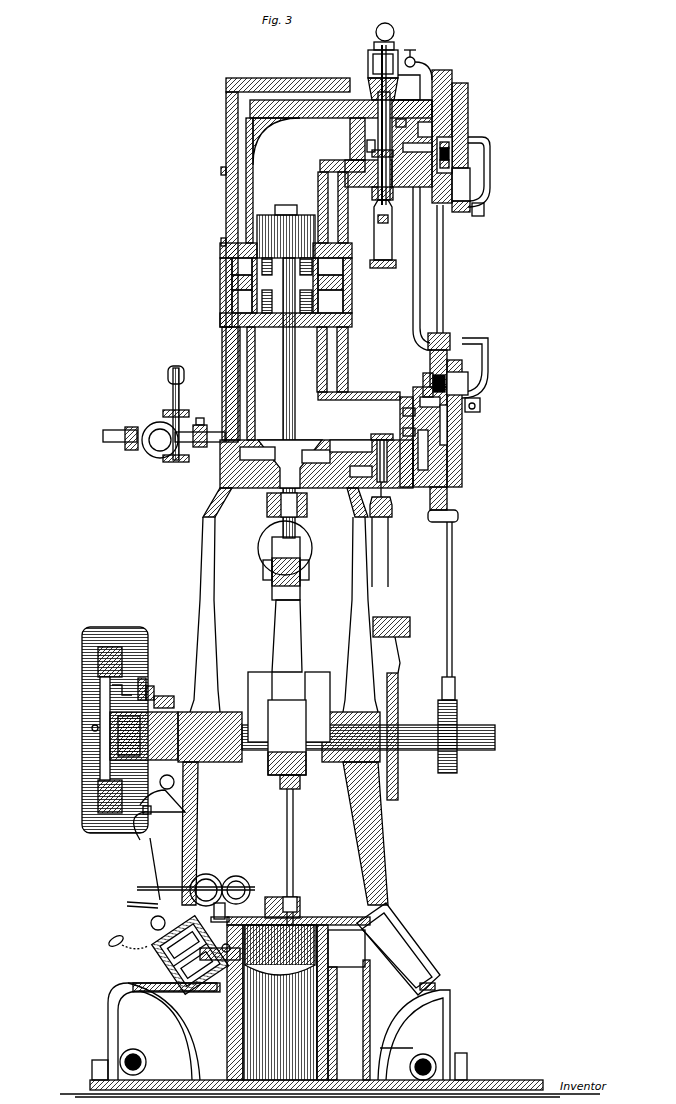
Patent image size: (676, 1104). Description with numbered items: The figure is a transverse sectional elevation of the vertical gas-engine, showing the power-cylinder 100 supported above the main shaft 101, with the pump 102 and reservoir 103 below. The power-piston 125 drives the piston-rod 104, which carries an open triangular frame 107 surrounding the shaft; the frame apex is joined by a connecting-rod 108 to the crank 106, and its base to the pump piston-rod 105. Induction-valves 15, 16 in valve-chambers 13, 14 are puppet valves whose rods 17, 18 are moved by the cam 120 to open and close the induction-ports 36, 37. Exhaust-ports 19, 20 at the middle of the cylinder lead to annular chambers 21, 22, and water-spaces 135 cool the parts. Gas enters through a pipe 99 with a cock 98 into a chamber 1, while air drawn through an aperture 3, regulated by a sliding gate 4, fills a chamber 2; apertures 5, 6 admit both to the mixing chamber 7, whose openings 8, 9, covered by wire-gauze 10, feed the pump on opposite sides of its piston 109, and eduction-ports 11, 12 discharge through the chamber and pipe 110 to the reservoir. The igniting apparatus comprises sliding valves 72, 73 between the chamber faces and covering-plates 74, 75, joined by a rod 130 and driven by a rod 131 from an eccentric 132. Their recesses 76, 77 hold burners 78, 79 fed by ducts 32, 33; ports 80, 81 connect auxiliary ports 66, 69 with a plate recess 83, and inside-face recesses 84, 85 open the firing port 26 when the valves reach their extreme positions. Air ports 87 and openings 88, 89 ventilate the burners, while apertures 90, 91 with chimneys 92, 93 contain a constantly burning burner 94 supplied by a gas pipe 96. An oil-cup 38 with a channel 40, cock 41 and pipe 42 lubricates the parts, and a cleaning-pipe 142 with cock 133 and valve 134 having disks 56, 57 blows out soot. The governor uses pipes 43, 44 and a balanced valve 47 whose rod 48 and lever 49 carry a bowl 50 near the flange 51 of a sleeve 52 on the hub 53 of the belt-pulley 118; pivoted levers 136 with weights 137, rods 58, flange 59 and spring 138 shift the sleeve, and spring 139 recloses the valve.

The gas chamber 1 is at (190, 955).
The air chamber 2 is at (181, 965).
The air aperture 3 is at (156, 960).
The sliding gate 4 is at (143, 950).
The gas chamber aperture 5 is at (188, 935).
The air chamber aperture 6 is at (187, 977).
The mixing chamber 7 is at (185, 947).
The upper mixing chamber opening 8 is at (220, 944).
The lower mixing chamber opening 9 is at (205, 985).
The wire-gauze 10 is at (205, 963).
The upper eduction-port 11 is at (298, 918).
The lower eduction-port 12 is at (349, 1005).
The upper valve-chamber 13 is at (388, 146).
The lower valve-chamber 14 is at (328, 421).
The upper induction-valve 15 is at (366, 147).
The lower induction-valve 16 is at (376, 454).
The upper induction-valve rod 17 is at (391, 234).
The lower induction-valve rod 18 is at (388, 499).
The lower exhaust-port 19 is at (326, 268).
The upper exhaust-port 20 is at (326, 306).
The annular exhaust chamber 21 is at (224, 265).
The annular exhaust chamber 22 is at (350, 302).
The lower firing port 26 is at (405, 418).
The upper valve duct 32 is at (450, 145).
The lower valve duct 33 is at (381, 139).
The upper induction-port 36 is at (405, 152).
The lower induction-port 37 is at (372, 446).
The oil-cup 38 is at (383, 50).
The central channel 40 is at (372, 88).
The cock 41 is at (418, 58).
The oil pipe 42 is at (413, 284).
The pump by-pass pipe 43 is at (227, 940).
The pump by-pass pipe 44 is at (229, 910).
The balanced valve 47 is at (239, 880).
The valve rod 48 is at (163, 886).
The lever 49 is at (152, 855).
The bowl 50 is at (166, 780).
The sleeve flange 51 is at (165, 702).
The screw-threaded sleeve 52 is at (157, 689).
The threaded hub 53 is at (144, 736).
The valve disk 56 is at (170, 412).
The valve disk 57 is at (163, 458).
The rods 58 is at (128, 667).
The sleeve flange 59 is at (142, 681).
The auxiliary port 66 is at (405, 126).
The auxiliary port 69 is at (405, 433).
The upper igniting valve 72 is at (447, 75).
The lower igniting valve 73 is at (448, 500).
The upper covering-plate 74 is at (468, 89).
The lower covering-plate 75 is at (462, 478).
The upper valve recess 76 is at (450, 165).
The lower valve recess 77 is at (447, 379).
The upper ignition-burner 78 is at (450, 154).
The lower ignition-burner 79 is at (444, 360).
The upper valve port 80 is at (452, 130).
The lower valve port 81 is at (462, 420).
The plate recess 83 is at (462, 438).
The inside-face recess 84 is at (409, 87).
The inside-face recess 85 is at (462, 452).
The air ports 87 is at (429, 360).
The air openings 88 is at (394, 193).
The air openings 89 is at (423, 379).
The upper aperture 90 is at (461, 190).
The lower aperture 91 is at (458, 383).
The upper chimney 92 is at (489, 172).
The lower chimney 93 is at (485, 368).
The pilot burner 94 is at (485, 215).
The gas pipe 96 is at (481, 406).
The gas cock 98 is at (133, 899).
The gas pipe 99 is at (150, 923).
The power-cylinder 100 is at (226, 199).
The main shaft 101 is at (496, 737).
The pump 102 is at (277, 1002).
The reservoir 103 is at (279, 1031).
The piston-rod 104 is at (283, 426).
The pump piston-rod 105 is at (298, 850).
The crank 106 is at (312, 681).
The triangular frame 107 is at (287, 737).
The connecting-rod 108 is at (300, 612).
The pump piston 109 is at (280, 950).
The chamber and pipe 110 is at (398, 949).
The belt-pulley 118 is at (92, 826).
The cam 120 is at (398, 770).
The power-piston 125 is at (286, 231).
The connecting rod 130 is at (443, 275).
The eccentric rod 131 is at (452, 592).
The eccentric 132 is at (118, 432).
The cock 133 is at (203, 420).
The weighted or spring-seated valve 134 is at (152, 426).
The water-spaces 135 is at (238, 134).
The pivoted levers 136 is at (100, 685).
The weights 137 is at (90, 657).
The spring 138 is at (92, 728).
The spring 139 is at (207, 875).
The cleaning-pipe 142 is at (212, 448).